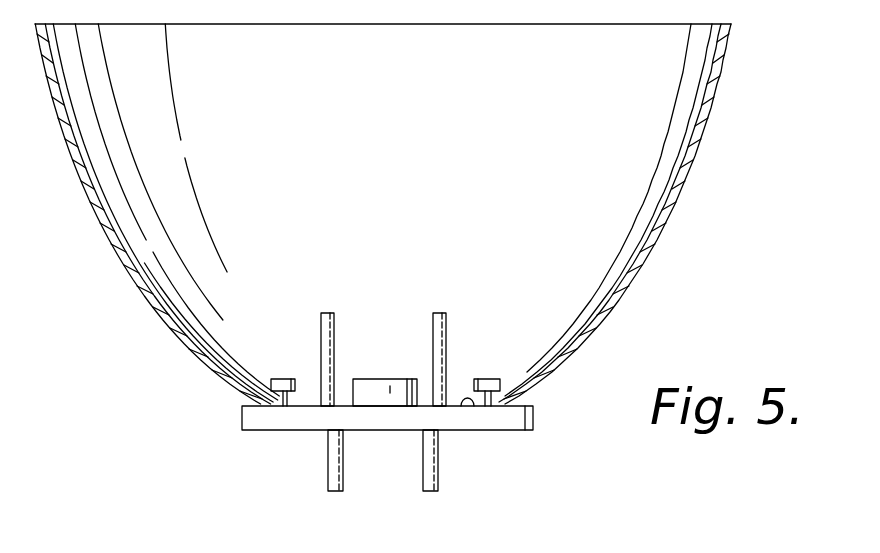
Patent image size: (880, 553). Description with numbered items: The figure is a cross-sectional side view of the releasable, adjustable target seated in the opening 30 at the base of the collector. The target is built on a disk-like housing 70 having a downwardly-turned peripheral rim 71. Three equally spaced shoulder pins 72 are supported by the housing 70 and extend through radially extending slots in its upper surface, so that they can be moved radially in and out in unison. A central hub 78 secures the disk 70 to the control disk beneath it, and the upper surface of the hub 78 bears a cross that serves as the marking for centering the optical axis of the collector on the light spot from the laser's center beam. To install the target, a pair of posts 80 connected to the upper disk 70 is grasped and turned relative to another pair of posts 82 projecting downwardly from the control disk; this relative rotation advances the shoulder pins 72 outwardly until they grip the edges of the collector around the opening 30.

The opening 30 is at (282, 407).
The disk-like housing 70 is at (470, 406).
The downwardly-turned peripheral rim 71 is at (534, 421).
The shoulder pins 72 is at (272, 378).
The central hub 78 is at (413, 379).
The posts 80 is at (433, 330).
The posts 82 is at (423, 463).